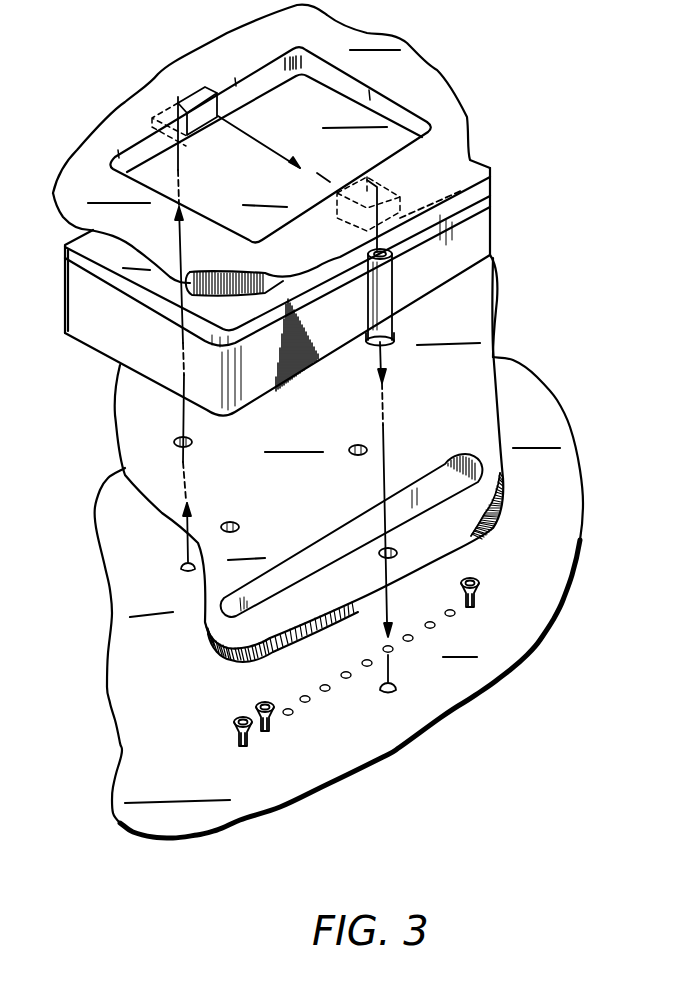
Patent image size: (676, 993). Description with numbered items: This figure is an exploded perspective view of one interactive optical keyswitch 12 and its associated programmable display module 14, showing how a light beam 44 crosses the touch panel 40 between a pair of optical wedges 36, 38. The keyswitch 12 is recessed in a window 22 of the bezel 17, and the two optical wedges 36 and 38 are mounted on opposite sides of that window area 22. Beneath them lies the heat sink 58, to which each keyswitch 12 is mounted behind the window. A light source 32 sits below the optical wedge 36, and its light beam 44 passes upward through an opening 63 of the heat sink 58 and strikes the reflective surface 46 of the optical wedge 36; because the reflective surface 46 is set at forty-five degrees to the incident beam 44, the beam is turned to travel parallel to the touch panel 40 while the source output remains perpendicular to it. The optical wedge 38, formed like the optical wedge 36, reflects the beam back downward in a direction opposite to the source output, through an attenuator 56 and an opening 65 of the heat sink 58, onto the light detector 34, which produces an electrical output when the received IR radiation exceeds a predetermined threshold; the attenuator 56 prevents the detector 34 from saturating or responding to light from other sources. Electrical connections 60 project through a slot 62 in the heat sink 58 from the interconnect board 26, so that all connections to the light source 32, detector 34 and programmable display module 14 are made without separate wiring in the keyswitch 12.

The interactive optical keyswitch 12 is at (107, 430).
The programmable display module 14 is at (65, 281).
The bezel 17 is at (428, 78).
The window 22 is at (321, 70).
The interconnect board 26 is at (410, 741).
The light source 32 is at (182, 566).
The light detector 34 is at (396, 688).
The optical wedge 36 is at (187, 88).
The optical wedge 38 is at (398, 192).
The touch panel 40 is at (337, 103).
The light beam 44 is at (183, 418).
The reflective surface 46 is at (167, 110).
The attenuator 56 is at (392, 282).
The heat sink 58 is at (497, 304).
The electrical connections 60 is at (264, 726).
The slot 62 is at (435, 482).
The opening 63 is at (192, 446).
The opening 65 is at (396, 553).